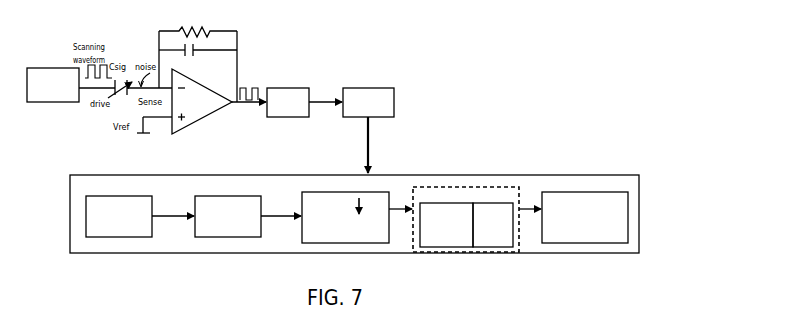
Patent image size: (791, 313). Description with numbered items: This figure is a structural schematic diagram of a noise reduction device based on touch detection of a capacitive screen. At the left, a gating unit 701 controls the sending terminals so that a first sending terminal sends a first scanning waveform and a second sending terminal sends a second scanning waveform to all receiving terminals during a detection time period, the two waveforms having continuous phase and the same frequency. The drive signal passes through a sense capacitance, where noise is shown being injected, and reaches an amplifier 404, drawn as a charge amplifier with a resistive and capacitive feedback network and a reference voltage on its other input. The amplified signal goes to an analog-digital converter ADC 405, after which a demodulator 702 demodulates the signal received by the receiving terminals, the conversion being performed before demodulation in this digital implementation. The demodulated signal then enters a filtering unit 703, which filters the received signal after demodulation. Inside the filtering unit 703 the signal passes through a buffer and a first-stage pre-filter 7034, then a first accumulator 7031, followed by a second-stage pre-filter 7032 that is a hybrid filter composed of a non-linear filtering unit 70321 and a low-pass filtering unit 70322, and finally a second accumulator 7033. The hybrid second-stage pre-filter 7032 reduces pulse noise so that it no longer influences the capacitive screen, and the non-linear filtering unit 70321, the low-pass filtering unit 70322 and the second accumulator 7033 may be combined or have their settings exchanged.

The gating unit 701 is at (54, 63).
The amplifier 404 is at (200, 82).
The analog-digital converter ADC 405 is at (285, 83).
The demodulator 702 is at (370, 83).
The filtering unit 703 is at (380, 172).
The first accumulator 7031 is at (345, 212).
The second-stage pre-filter 7032 is at (466, 216).
The non-linear filtering unit 70321 is at (446, 220).
The low-pass filtering unit 70322 is at (493, 220).
The second accumulator 7033 is at (585, 212).
The first-stage pre-filter 7034 is at (228, 209).